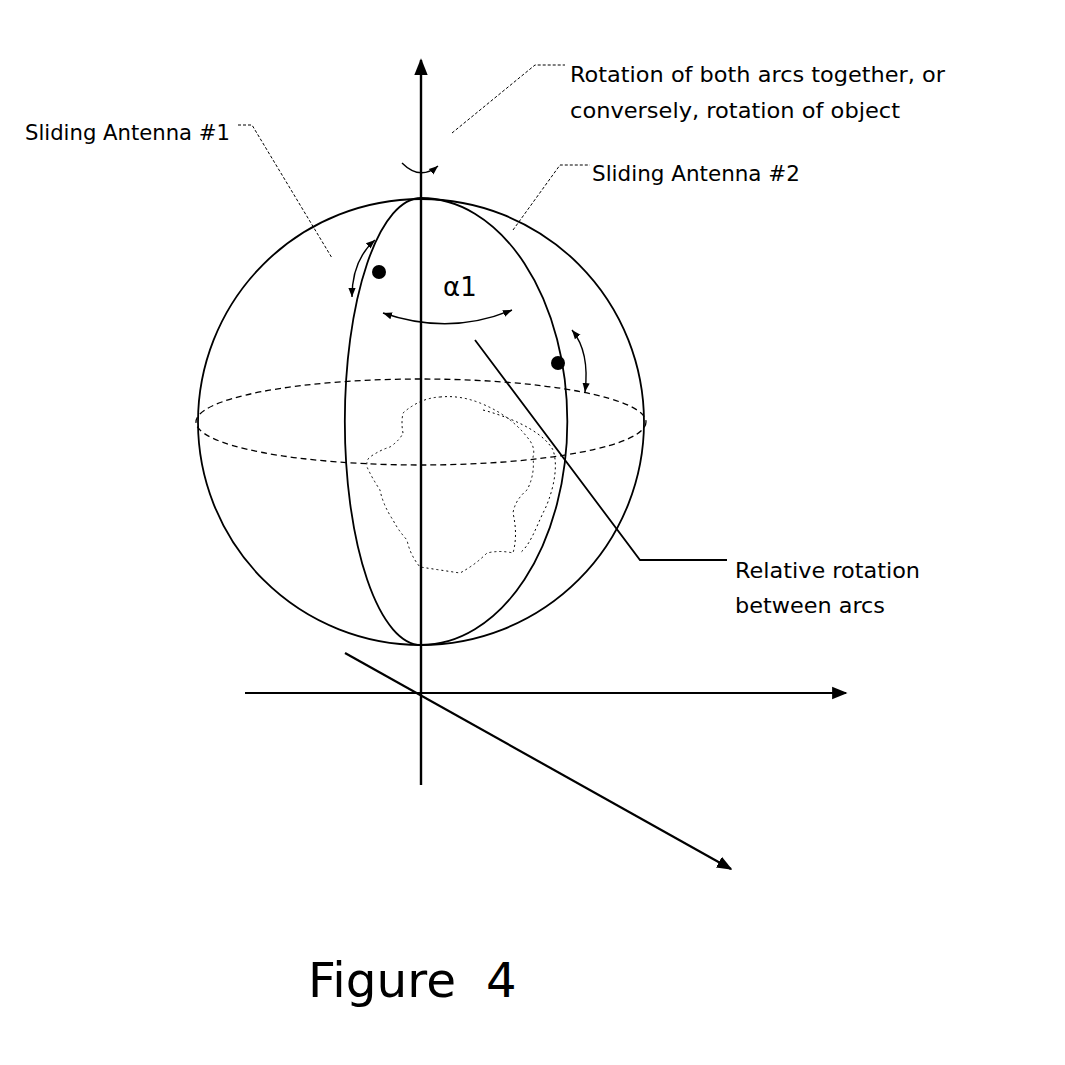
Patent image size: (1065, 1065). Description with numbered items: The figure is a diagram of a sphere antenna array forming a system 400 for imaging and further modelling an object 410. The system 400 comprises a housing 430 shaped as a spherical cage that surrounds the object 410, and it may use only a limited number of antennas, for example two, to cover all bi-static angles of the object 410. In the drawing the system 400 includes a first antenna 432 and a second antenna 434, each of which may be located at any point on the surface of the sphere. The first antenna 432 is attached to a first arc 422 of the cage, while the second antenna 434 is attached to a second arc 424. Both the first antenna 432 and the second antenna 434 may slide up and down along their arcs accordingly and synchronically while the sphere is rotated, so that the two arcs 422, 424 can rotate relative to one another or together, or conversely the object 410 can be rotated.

The system 400 is at (157, 0).
The object 410 is at (648, 420).
The first arc 422 is at (355, 506).
The second arc 424 is at (540, 265).
The housing 430 is at (590, 575).
The first antenna 432 is at (368, 273).
The second antenna 434 is at (566, 360).